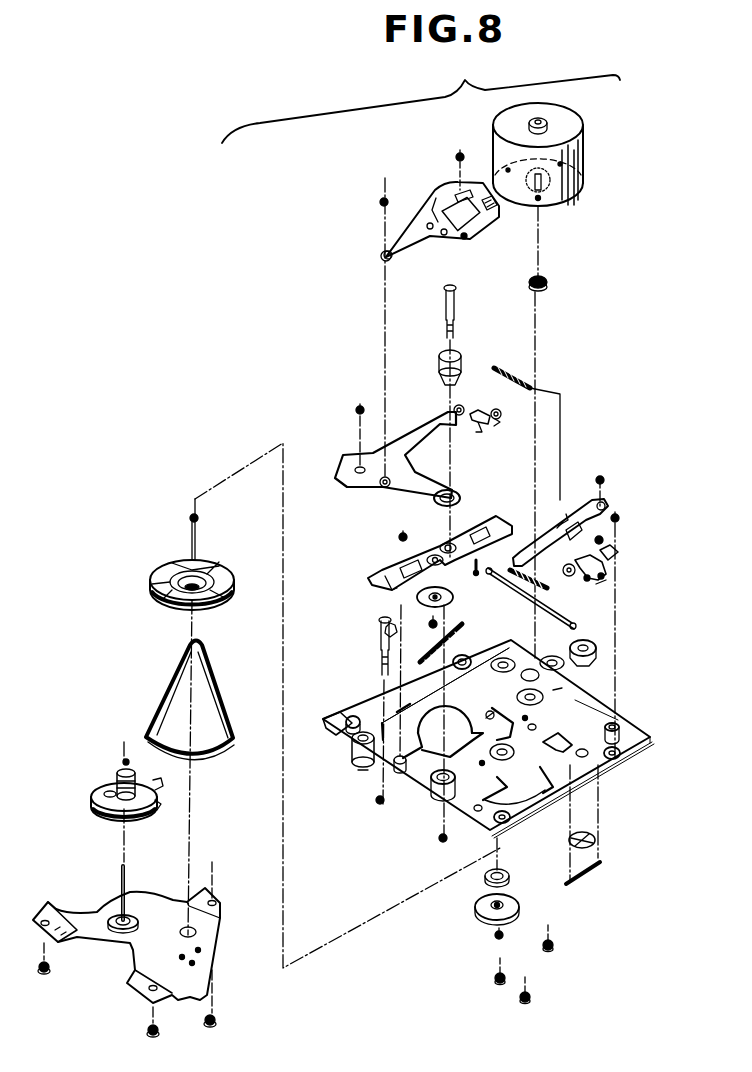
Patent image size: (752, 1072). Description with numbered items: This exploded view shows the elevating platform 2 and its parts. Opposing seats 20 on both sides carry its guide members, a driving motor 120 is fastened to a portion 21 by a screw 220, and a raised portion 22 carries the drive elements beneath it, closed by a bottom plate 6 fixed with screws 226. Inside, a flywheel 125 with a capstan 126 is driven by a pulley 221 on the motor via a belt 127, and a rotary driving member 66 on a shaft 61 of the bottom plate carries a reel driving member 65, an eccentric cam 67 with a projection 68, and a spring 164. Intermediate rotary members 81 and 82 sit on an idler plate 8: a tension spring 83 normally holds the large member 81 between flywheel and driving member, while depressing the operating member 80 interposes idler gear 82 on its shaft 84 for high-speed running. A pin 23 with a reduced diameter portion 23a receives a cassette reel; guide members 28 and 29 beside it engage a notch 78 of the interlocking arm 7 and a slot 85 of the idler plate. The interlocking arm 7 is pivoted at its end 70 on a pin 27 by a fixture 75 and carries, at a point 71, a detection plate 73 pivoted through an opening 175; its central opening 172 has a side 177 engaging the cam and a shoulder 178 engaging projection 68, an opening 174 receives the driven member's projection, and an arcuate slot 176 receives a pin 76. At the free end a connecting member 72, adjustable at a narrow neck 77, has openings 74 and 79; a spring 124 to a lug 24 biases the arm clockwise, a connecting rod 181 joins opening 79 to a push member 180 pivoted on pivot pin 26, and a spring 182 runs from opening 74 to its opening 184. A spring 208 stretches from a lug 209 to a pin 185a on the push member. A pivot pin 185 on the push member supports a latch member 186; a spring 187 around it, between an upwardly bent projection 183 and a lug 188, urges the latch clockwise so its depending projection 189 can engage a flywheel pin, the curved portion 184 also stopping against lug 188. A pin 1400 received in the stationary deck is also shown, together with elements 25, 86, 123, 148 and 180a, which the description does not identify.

The elevating platform 2 is at (438, 800).
The bottom plate 6 is at (122, 948).
The interlocking arm 7 is at (408, 478).
The idler plate 8 is at (478, 573).
The seats 20 is at (468, 657).
The portion 21 is at (556, 685).
The raised portion 22 is at (410, 710).
The pin 23 is at (350, 755).
The reduced diameter portion 23a is at (358, 770).
The lug 24 is at (560, 735).
The bushing 25 is at (591, 643).
The pivot pin 26 is at (618, 724).
The pin 27 is at (455, 780).
The guide member 28 is at (328, 730).
The guide member 29 is at (400, 774).
The shaft 61 is at (126, 872).
The reel driving member 65 is at (133, 771).
The rotary driving member 66 is at (161, 804).
The eccentric cam 67 is at (92, 803).
The projection 68 is at (104, 793).
The pivoted end 70 is at (458, 494).
The pivot point 71 is at (385, 488).
The connecting member 72 is at (480, 412).
The detection plate 73 is at (464, 236).
The opening 74 is at (498, 424).
The fixture 75 is at (458, 358).
The pin 76 is at (455, 408).
The narrow neck 77 is at (480, 428).
The notch 78 is at (355, 466).
The opening 79 is at (500, 412).
The operating member 80 is at (383, 568).
The intermediate rotary member 81 is at (515, 902).
The idler gear 82 is at (452, 595).
The tension spring 83 is at (458, 628).
The shaft 84 is at (448, 553).
The slot 85 is at (408, 550).
The tab 86 is at (388, 584).
The driving motor 120 is at (583, 155).
The plate edge 123 is at (580, 700).
The spring 124 is at (515, 378).
The flywheel 125 is at (225, 578).
The capstan 126 is at (173, 563).
The belt 127 is at (224, 690).
The clip 148 is at (163, 784).
The spring 164 is at (121, 764).
The opening 172 is at (444, 232).
The opening 174 is at (448, 220).
The opening 175 is at (390, 258).
The arcuate slot 176 is at (467, 185).
The side of opening 177 is at (436, 198).
The shoulder 178 is at (430, 226).
The push member 180 is at (604, 570).
The lever arm 180a is at (606, 582).
The connecting rod 181 is at (558, 612).
The spring 182 is at (522, 583).
The projection 183 is at (614, 552).
The opening 184 is at (569, 576).
The pivot pin 185 is at (603, 540).
The pin 185a is at (604, 578).
The latch member 186 is at (586, 512).
The spring 187 is at (619, 520).
The lug 188 is at (557, 528).
The depending projection 189 is at (534, 540).
The spring 208 is at (592, 874).
The lug 209 is at (585, 778).
The screw 220 is at (554, 948).
The pulley 221 is at (529, 283).
The screws 226 is at (48, 974).
The pin 1400 is at (380, 641).